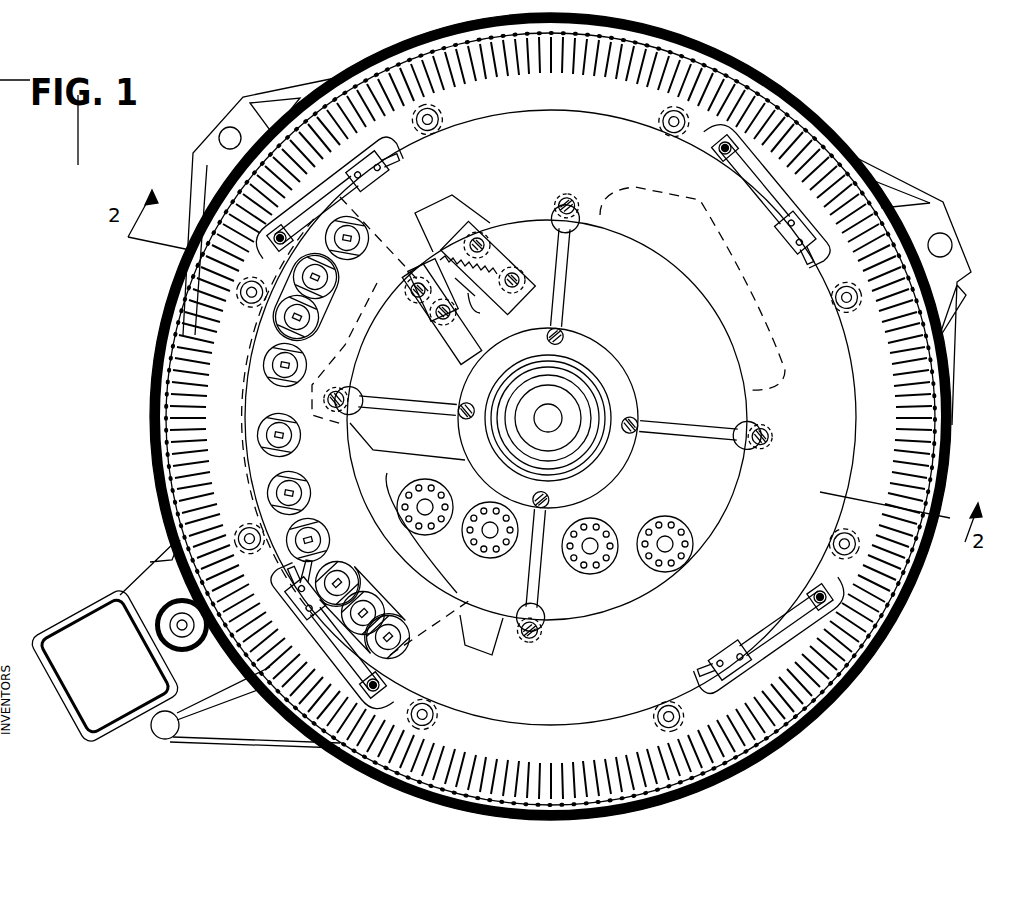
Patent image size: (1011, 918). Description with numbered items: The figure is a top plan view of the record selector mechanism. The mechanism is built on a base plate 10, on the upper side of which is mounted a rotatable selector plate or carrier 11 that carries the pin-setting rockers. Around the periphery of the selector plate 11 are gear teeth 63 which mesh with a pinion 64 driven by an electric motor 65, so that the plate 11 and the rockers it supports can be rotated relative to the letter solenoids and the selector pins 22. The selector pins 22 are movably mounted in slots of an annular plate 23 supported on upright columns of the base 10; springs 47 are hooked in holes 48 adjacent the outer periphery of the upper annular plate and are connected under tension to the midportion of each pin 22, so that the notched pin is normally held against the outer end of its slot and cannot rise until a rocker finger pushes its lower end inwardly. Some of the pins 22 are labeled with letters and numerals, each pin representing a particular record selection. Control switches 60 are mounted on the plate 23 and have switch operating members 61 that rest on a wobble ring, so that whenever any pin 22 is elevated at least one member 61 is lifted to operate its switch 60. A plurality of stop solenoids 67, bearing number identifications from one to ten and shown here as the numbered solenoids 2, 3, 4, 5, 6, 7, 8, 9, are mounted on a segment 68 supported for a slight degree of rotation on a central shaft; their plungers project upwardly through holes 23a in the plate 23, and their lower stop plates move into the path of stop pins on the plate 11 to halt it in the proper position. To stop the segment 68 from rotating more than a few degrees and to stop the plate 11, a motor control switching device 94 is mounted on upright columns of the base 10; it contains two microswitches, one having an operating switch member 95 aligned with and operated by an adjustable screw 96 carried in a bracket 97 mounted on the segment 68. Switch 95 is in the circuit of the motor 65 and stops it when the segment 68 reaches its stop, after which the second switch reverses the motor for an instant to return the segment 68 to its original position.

The base plate 10 is at (193, 180).
The rotatable selector plate 11 is at (160, 368).
The gear teeth 63 is at (165, 408).
The selector pins 22 is at (172, 452).
The springs 47 is at (770, 752).
The holes 48 is at (800, 748).
The annular plate 23 is at (700, 609).
The holes 23a is at (378, 552).
The control switches 60 is at (345, 612).
The switch operating members 61 is at (382, 684).
The pinion 64 is at (172, 603).
The electric motor 65 is at (104, 668).
The stop solenoids 67 is at (320, 530).
The stop solenoid number identification 2 is at (293, 493).
The stop solenoid number identification 3 is at (299, 317).
The stop solenoid number identification 4 is at (349, 238).
The stop solenoid number identification 5 is at (363, 610).
The stop solenoid number identification 6 is at (312, 540).
The stop solenoid number identification 7 is at (289, 365).
The stop solenoid number identification 8 is at (310, 295).
The stop solenoid number identification 9 is at (284, 435).
The motor control switching device 94 is at (498, 262).
The operating switch member 95 is at (479, 302).
The adjustable screw 96 is at (470, 267).
The bracket 97 is at (420, 322).
The segment 68 is at (462, 332).